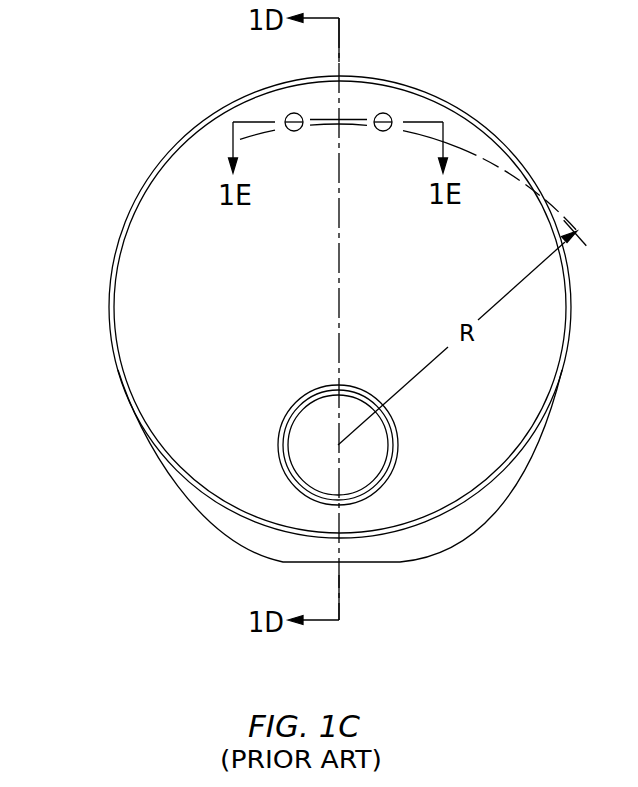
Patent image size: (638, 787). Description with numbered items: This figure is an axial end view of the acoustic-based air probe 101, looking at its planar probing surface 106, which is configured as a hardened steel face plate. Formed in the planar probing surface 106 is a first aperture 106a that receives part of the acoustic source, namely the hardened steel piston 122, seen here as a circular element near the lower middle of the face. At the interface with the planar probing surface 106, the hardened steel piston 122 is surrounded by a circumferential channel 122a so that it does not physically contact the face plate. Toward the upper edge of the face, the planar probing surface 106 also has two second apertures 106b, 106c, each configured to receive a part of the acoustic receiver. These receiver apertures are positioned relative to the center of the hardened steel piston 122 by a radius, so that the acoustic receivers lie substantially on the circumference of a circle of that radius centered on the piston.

The acoustic-based air probe 101 is at (150, 173).
The planar probing surface 106 is at (197, 400).
The first aperture 106a is at (399, 450).
The second aperture 106b is at (292, 113).
The second aperture 106c is at (383, 113).
The hardened steel piston 122 is at (315, 418).
The circumferential channel 122a is at (382, 487).